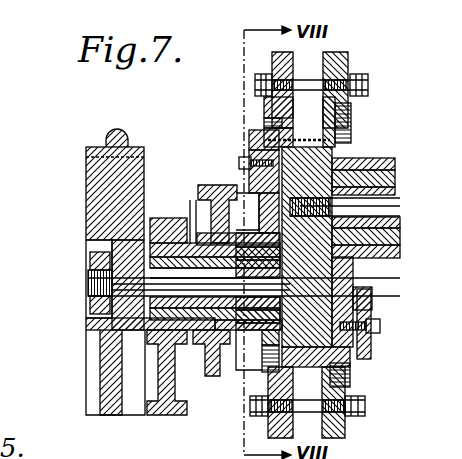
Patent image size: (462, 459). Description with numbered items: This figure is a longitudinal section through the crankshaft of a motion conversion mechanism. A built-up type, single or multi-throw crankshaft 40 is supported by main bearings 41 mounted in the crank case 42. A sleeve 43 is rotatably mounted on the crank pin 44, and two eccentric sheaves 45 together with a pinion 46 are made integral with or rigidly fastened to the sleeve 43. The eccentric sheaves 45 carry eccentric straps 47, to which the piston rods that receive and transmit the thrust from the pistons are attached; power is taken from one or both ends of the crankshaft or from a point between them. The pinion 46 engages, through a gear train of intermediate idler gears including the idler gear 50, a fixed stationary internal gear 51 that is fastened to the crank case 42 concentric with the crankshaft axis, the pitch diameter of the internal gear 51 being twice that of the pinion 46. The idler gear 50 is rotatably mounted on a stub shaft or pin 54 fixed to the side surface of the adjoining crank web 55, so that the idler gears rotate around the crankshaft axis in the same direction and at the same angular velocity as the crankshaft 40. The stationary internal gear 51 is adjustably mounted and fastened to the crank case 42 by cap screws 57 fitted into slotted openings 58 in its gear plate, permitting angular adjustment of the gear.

The crankshaft 40 is at (98, 192).
The main bearings 41 is at (105, 145).
The crank case 42 is at (331, 58).
The sleeve 43 is at (192, 243).
The crank pin 44 is at (160, 222).
The eccentric sheaves 45 is at (157, 405).
The pinion 46 is at (348, 147).
The eccentric straps 47 is at (347, 112).
The idler gear 50 is at (237, 195).
The internal gear 51 is at (262, 120).
The pin 54 is at (262, 140).
The crank web 55 is at (311, 173).
The cap screws 57 is at (255, 82).
The slotted openings 58 is at (270, 76).